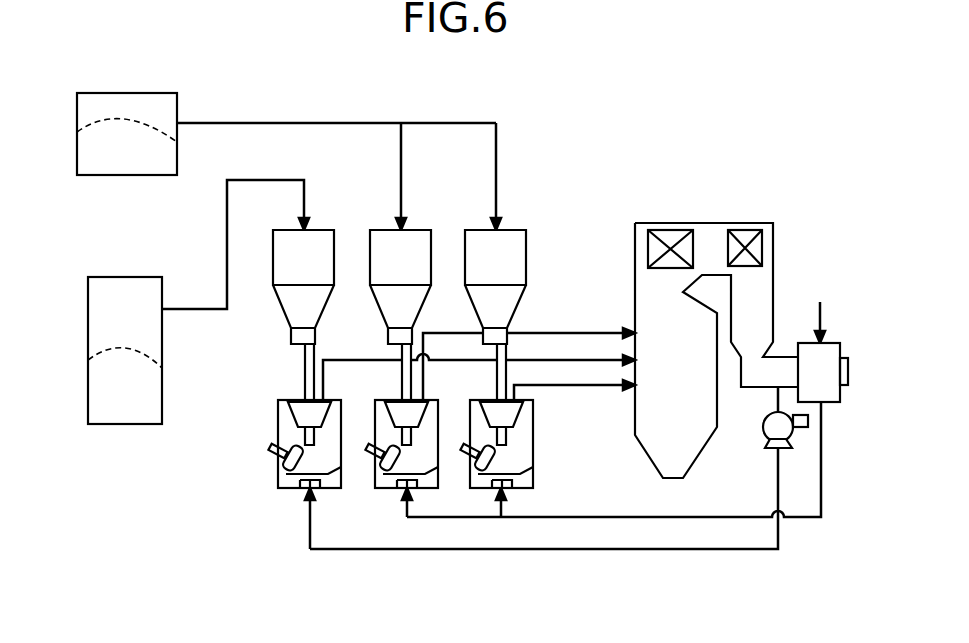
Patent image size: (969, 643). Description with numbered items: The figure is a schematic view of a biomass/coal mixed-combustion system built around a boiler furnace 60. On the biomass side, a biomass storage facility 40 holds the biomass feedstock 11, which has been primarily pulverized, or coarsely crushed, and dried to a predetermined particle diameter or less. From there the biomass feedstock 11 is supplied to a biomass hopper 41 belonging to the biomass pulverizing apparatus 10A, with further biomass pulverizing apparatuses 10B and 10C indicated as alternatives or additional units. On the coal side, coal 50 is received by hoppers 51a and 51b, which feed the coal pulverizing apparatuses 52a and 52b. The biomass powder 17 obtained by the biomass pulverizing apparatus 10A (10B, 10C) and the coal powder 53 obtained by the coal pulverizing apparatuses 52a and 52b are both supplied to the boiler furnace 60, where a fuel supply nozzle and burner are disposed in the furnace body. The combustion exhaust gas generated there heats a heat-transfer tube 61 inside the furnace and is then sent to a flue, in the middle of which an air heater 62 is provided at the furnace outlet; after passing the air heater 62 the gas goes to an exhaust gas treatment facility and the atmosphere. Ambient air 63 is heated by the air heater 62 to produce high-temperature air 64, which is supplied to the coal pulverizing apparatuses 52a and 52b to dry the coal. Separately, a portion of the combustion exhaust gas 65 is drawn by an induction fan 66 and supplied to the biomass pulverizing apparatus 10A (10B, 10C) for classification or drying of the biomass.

The biomass pulverizing apparatus 10A is at (290, 494).
The biomass pulverizing apparatus 10B is at (392, 469).
The biomass pulverizing apparatus 10C is at (545, 444).
The biomass feedstock 11 is at (115, 387).
The biomass powder 17 is at (355, 358).
The biomass storage facility 40 is at (148, 425).
The biomass hopper 41 is at (283, 228).
The coal 50 is at (95, 147).
The hopper 51a is at (378, 228).
The hopper 51b is at (472, 228).
The coal pulverizing apparatus 52a is at (386, 494).
The coal pulverizing apparatus 52b is at (540, 466).
The coal powder 53 is at (572, 328).
The boiler furnace 60 is at (636, 222).
The heat-transfer tube 61 is at (694, 250).
The air heater 62 is at (842, 347).
The ambient air 63 is at (822, 304).
The high-temperature air 64 is at (822, 470).
The combustion exhaust gas 65 is at (733, 552).
The induction fan 66 is at (764, 440).